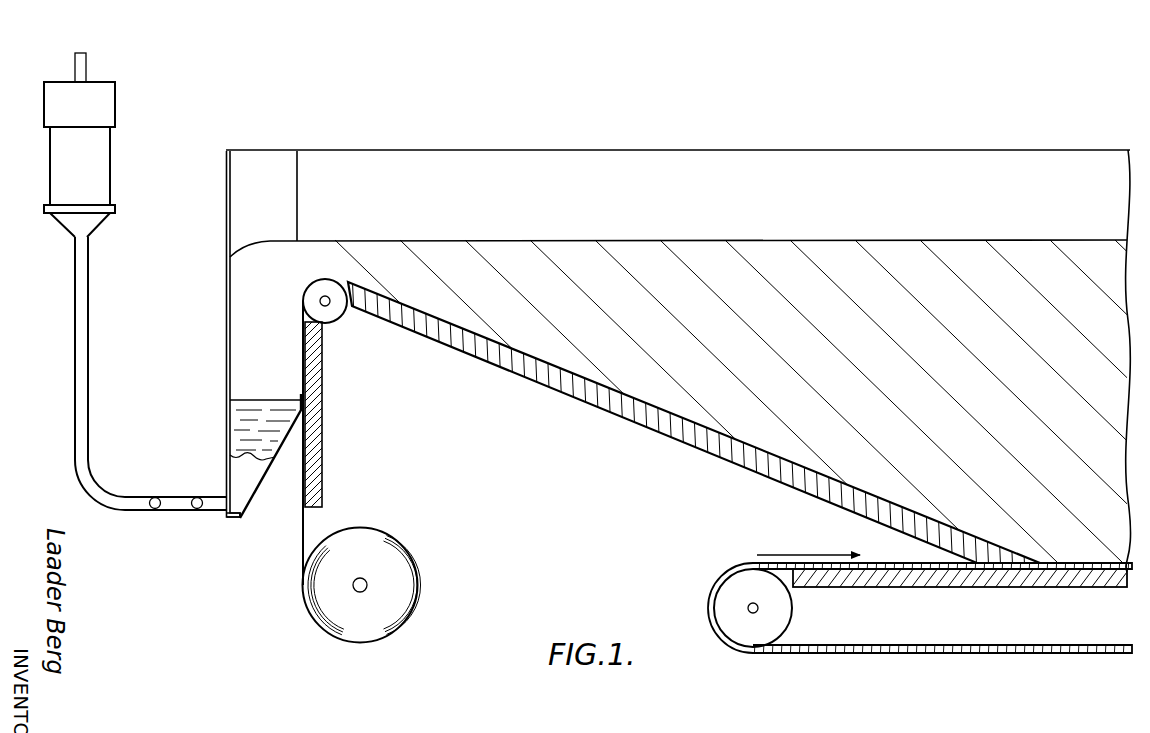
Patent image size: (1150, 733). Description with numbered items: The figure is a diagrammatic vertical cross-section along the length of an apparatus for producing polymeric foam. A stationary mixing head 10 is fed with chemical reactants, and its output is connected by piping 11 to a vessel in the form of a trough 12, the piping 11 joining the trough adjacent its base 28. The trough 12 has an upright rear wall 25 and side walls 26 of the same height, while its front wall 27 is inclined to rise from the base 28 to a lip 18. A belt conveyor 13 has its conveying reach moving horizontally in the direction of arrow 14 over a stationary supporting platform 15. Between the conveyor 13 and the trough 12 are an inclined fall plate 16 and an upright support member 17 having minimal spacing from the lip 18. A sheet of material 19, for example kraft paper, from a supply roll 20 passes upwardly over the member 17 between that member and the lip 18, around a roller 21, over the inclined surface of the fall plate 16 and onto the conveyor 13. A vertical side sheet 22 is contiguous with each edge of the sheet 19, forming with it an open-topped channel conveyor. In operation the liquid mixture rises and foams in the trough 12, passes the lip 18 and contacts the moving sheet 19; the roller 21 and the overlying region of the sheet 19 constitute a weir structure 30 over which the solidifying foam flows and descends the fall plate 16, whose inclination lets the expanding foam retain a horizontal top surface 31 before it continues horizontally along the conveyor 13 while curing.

The mixing head 10 is at (107, 142).
The piping 11 is at (84, 478).
The trough 12 is at (224, 460).
The belt conveyor 13 is at (862, 655).
The arrow 14 is at (815, 554).
The stationary supporting platform 15 is at (967, 578).
The inclined fall plate 16 is at (628, 421).
The upright support member 17 is at (323, 491).
The lip 18 is at (300, 397).
The sheet of material 19 is at (463, 331).
The supply roll 20 is at (383, 563).
The roller 21 is at (333, 320).
The vertical side sheet 22 is at (660, 152).
The upright rear wall 25 is at (226, 206).
The side walls 26 is at (265, 156).
The front wall 27 is at (251, 476).
The base 28 is at (233, 519).
The weir structure 30 is at (338, 270).
The horizontal top surface 31 is at (893, 238).